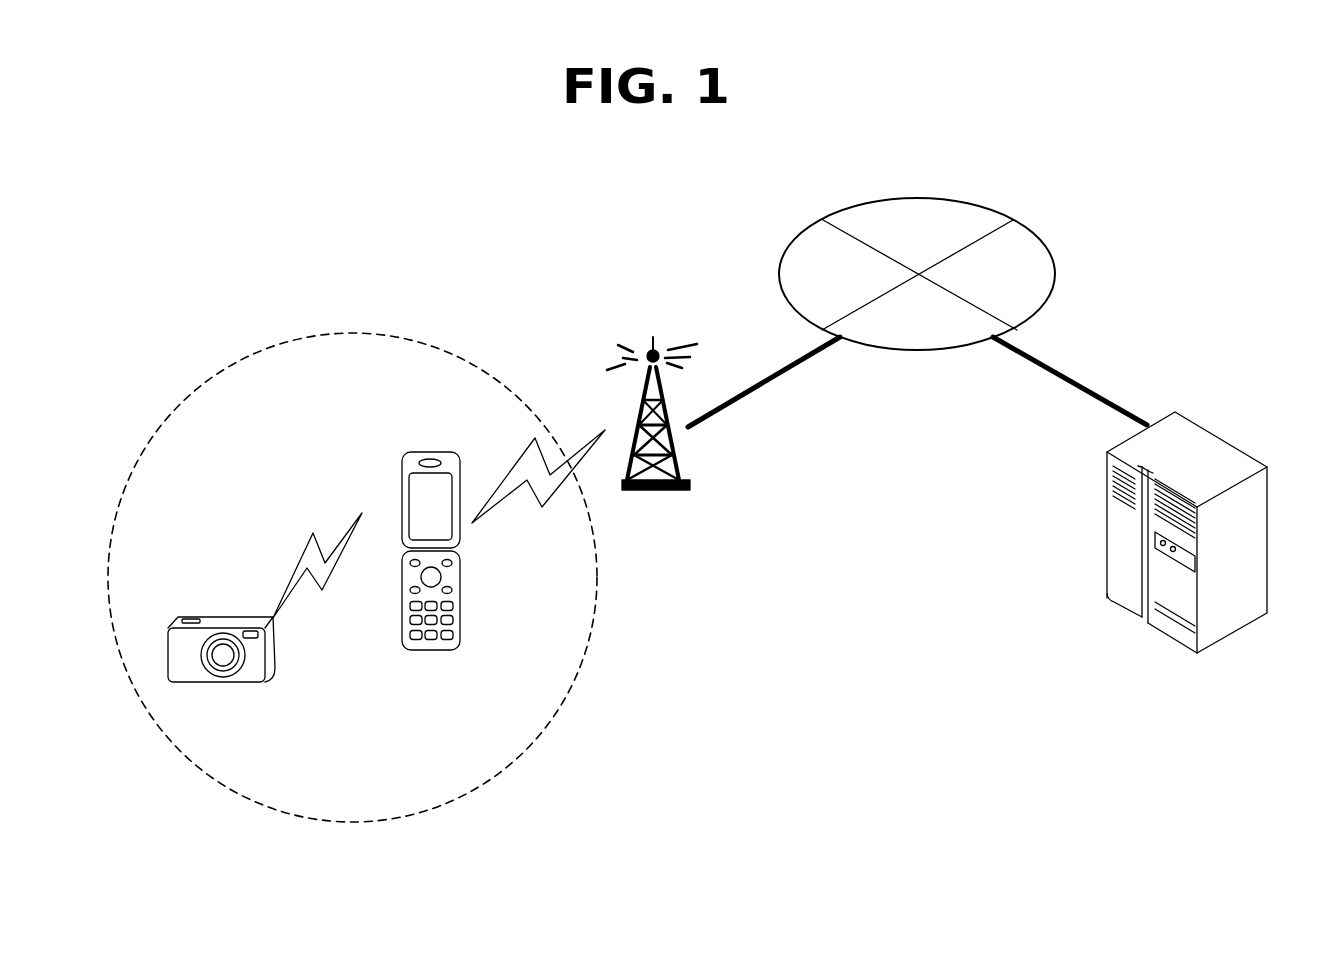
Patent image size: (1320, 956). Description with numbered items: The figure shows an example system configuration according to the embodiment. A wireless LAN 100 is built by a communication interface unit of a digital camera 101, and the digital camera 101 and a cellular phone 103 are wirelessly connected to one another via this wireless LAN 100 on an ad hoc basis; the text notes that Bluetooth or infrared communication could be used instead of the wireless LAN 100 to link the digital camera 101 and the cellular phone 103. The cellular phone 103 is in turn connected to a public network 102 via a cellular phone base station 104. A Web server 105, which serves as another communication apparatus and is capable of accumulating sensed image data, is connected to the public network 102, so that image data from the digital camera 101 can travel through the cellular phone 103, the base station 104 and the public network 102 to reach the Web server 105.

The wireless LAN 100 is at (351, 332).
The digital camera 101 is at (228, 613).
The public network 102 is at (923, 198).
The cellular phone 103 is at (432, 451).
The cellular phone base station 104 is at (643, 491).
The Web server 105 is at (1211, 428).